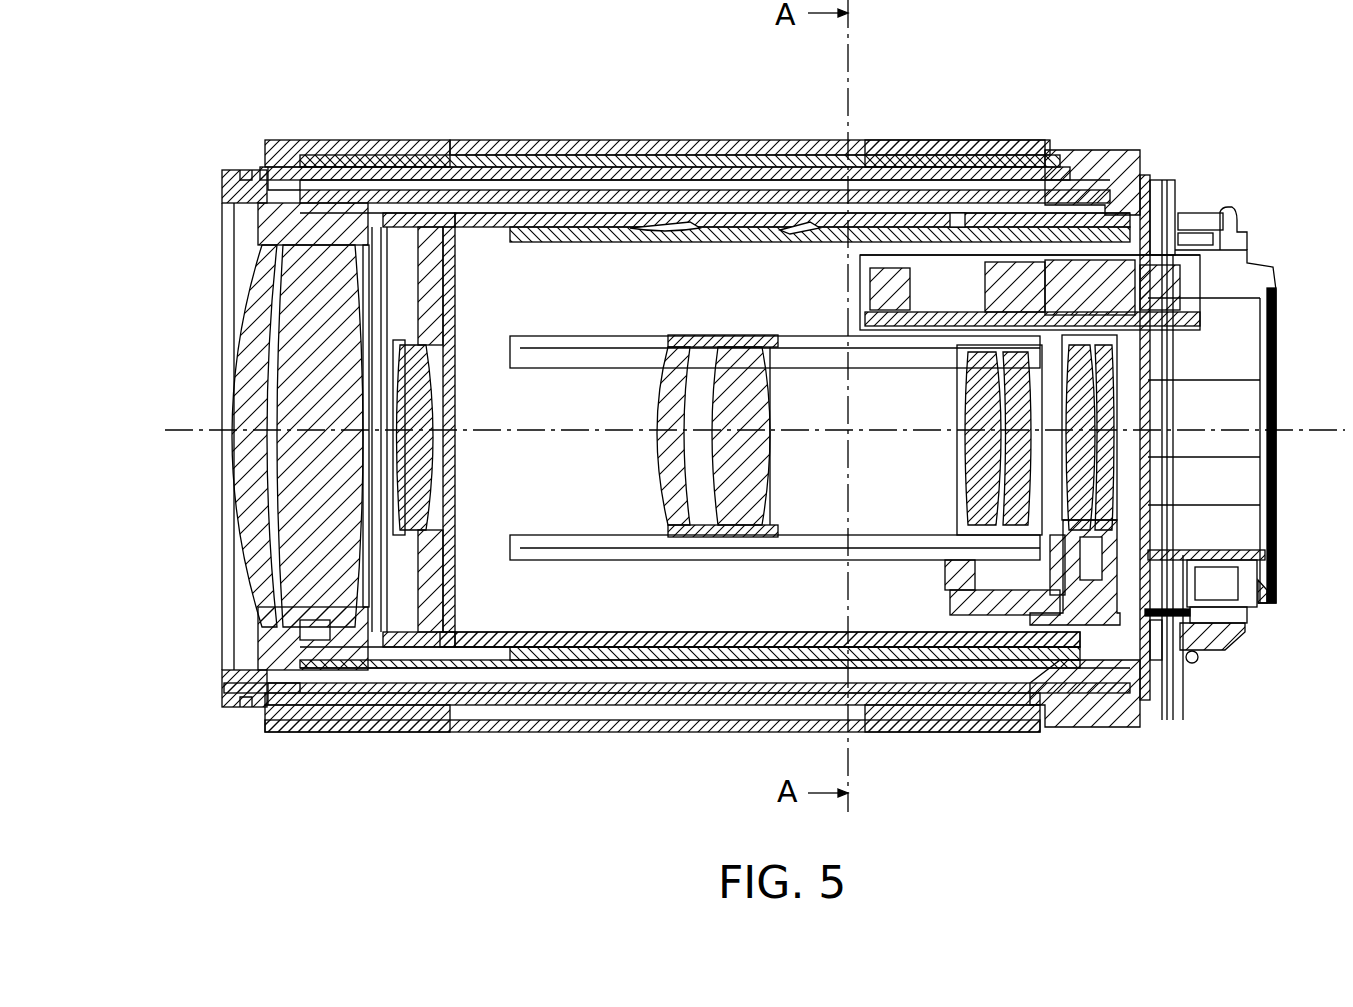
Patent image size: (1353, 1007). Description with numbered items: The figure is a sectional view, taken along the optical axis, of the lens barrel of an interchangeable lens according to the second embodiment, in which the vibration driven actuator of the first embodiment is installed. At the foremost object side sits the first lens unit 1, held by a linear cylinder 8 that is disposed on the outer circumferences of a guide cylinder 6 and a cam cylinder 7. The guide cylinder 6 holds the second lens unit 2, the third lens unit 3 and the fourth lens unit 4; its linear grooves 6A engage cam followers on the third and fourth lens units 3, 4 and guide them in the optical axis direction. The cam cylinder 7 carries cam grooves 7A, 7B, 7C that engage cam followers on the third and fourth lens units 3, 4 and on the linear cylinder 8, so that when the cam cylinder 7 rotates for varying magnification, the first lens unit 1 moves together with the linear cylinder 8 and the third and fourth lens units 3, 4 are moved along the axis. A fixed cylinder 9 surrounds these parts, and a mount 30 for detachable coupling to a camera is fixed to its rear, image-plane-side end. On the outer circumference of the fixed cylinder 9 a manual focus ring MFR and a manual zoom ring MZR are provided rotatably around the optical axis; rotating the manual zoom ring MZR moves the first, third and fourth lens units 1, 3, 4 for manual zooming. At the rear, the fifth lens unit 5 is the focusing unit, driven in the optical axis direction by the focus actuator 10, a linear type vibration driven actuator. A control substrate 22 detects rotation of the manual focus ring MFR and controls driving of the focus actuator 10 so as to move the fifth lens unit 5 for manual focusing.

The first lens unit 1 is at (325, 530).
The second lens unit 2 is at (440, 640).
The third lens unit 3 is at (735, 480).
The fourth lens unit 4 is at (975, 480).
The fifth lens unit 5 is at (1080, 370).
The guide cylinder 6 is at (458, 230).
The linear grooves 6A is at (583, 345).
The cam cylinder 7 is at (562, 215).
The cam groove 7A is at (660, 222).
The cam groove 7B is at (805, 222).
The cam groove 7C is at (955, 213).
The linear cylinder 8 is at (228, 170).
The fixed cylinder 9 is at (1100, 180).
The focus actuator 10 is at (1184, 577).
The control substrate 22 is at (1188, 172).
The mount 30 is at (1236, 214).
The manual focus ring MFR is at (330, 142).
The manual zoom ring MZR is at (985, 148).